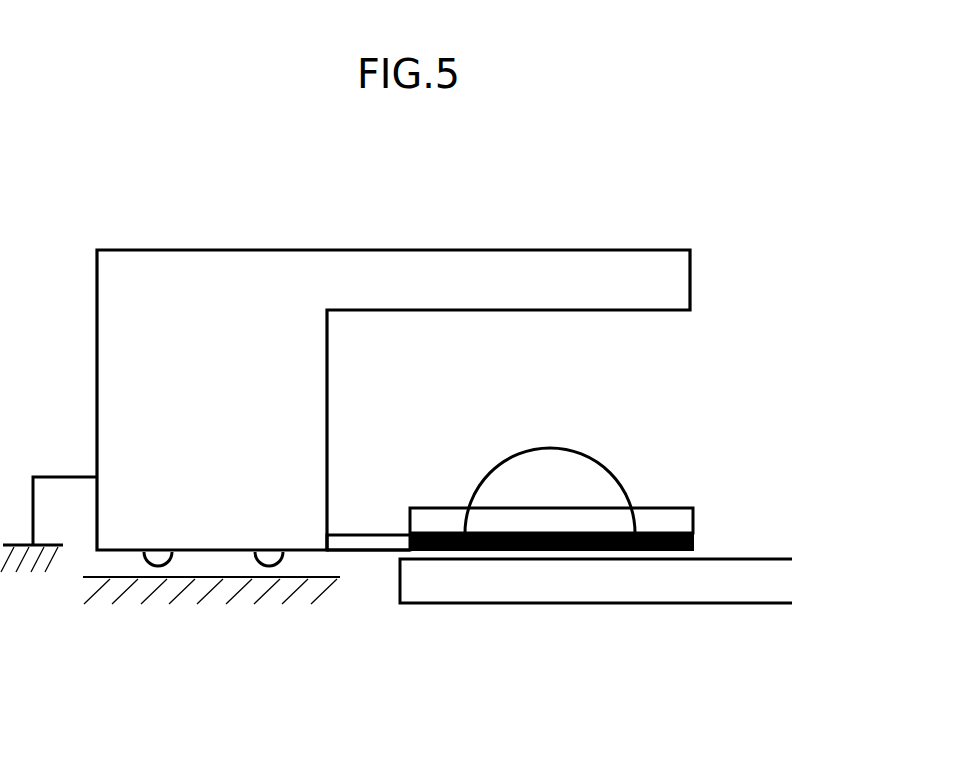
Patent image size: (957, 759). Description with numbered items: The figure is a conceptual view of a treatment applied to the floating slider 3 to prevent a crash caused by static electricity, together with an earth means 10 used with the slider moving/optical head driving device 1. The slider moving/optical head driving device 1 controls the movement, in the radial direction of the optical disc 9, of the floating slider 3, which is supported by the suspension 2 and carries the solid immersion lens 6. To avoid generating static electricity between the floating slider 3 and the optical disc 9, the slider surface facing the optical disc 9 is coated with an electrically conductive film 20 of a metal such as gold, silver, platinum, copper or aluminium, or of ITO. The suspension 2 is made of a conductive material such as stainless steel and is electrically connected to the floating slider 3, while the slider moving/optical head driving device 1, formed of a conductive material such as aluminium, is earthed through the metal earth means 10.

The slider moving/optical head driving device 1 is at (283, 248).
The suspension 2 is at (363, 533).
The floating slider 3 is at (658, 513).
The solid immersion lens 6 is at (497, 492).
The optical disc 9 is at (590, 578).
The earth means 10 is at (61, 476).
The electrically conductive film 20 is at (428, 550).